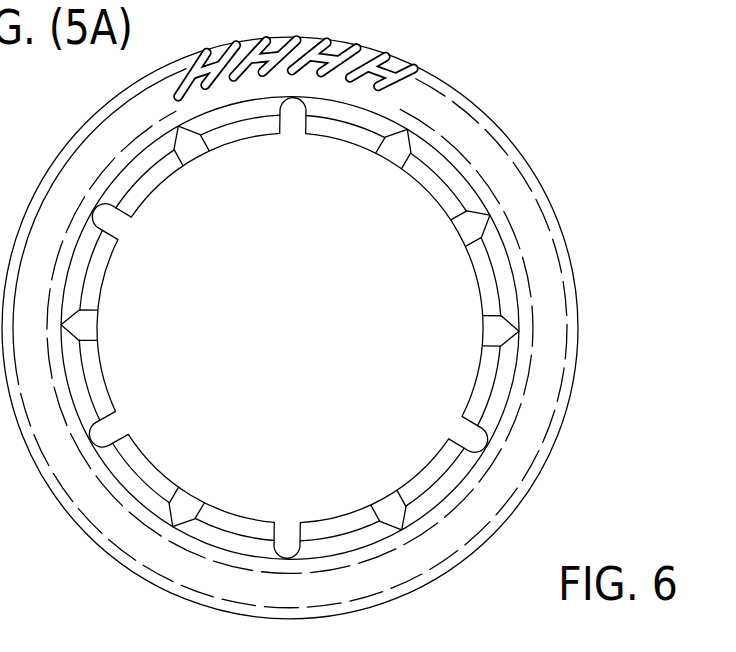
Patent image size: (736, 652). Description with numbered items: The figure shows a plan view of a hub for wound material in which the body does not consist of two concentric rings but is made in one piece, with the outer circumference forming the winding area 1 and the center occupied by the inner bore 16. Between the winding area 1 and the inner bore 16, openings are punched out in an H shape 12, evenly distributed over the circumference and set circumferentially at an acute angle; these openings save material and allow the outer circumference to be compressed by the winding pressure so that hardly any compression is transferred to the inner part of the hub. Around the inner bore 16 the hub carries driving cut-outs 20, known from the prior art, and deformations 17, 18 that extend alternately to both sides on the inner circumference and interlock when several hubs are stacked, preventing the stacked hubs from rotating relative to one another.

The winding area 1 is at (541, 180).
The H shape 12 is at (385, 67).
The inner bore 16 is at (420, 370).
The deformations 17 is at (472, 403).
The deformations 18 is at (315, 525).
The driving cut-outs 20 is at (117, 209).